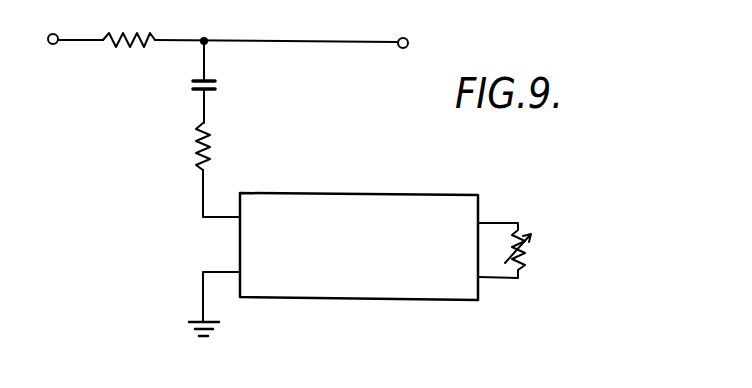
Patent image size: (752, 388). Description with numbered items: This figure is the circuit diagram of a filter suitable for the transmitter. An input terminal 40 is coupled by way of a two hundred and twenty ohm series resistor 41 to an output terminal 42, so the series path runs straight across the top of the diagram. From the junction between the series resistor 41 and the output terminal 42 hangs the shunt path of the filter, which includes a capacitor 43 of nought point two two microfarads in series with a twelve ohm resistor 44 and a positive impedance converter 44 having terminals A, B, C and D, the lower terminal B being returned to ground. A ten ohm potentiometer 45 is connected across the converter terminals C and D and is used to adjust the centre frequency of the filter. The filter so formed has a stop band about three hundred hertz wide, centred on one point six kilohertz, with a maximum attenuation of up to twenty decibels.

The input terminal 40 is at (53, 44).
The series resistor 41 is at (135, 46).
The output terminal 42 is at (404, 49).
The capacitor 43 is at (215, 79).
The positive impedance converter 44 is at (208, 141).
The potentiometer 45 is at (529, 233).